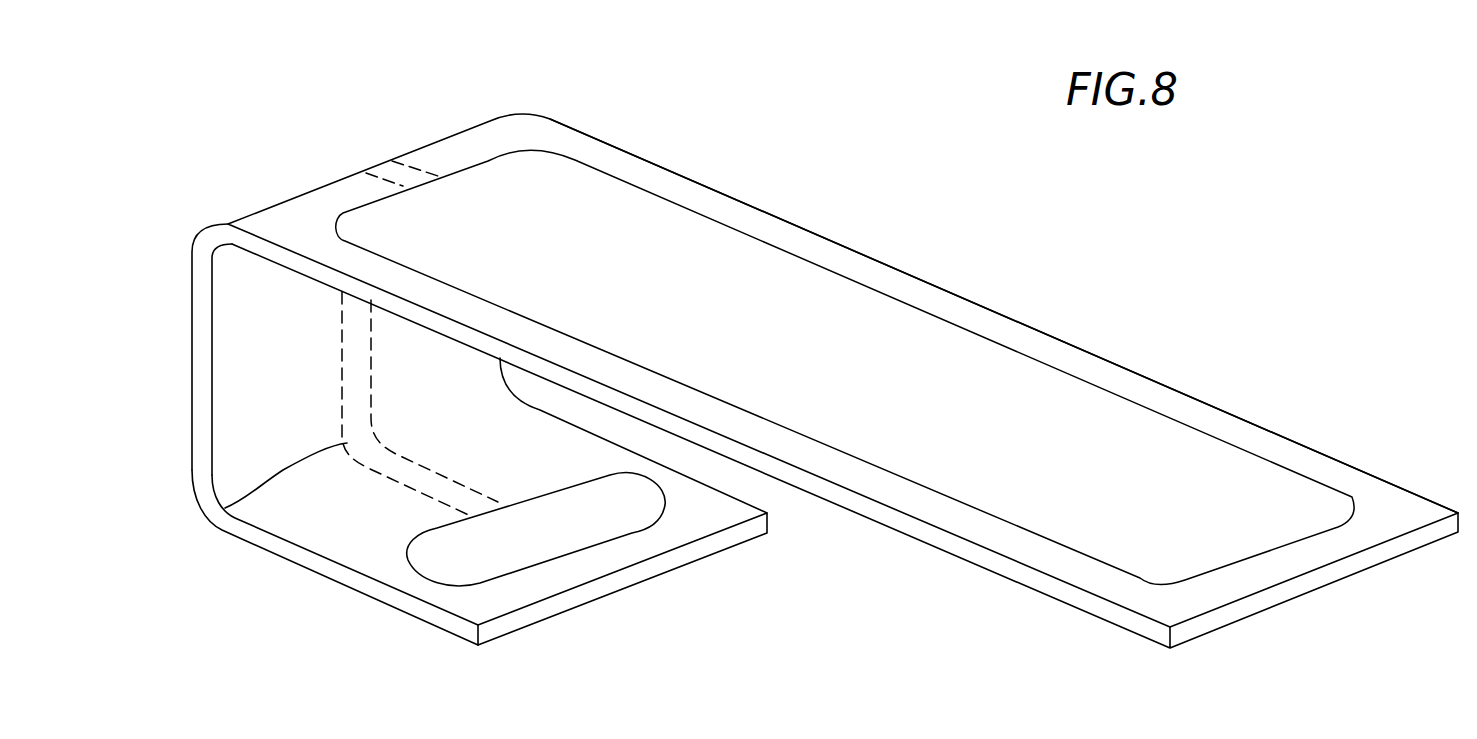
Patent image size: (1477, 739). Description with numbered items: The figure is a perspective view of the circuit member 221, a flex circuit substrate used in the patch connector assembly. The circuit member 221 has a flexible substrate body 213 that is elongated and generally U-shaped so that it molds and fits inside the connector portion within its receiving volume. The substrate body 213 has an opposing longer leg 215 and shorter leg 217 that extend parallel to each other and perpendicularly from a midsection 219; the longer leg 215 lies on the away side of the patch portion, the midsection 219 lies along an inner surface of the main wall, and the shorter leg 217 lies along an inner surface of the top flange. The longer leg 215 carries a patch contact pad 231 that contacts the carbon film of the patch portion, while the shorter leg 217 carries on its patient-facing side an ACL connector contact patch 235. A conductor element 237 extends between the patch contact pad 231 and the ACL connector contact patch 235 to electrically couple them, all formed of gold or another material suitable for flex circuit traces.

The flexible substrate body 213 is at (278, 206).
The longer leg 215 is at (938, 289).
The shorter leg 217 is at (287, 560).
The midsection 219 is at (197, 358).
The circuit member 221 is at (820, 669).
The patch contact pad 231 is at (867, 361).
The ACL connector contact patch 235 is at (522, 575).
The conductor element 237 is at (222, 505).